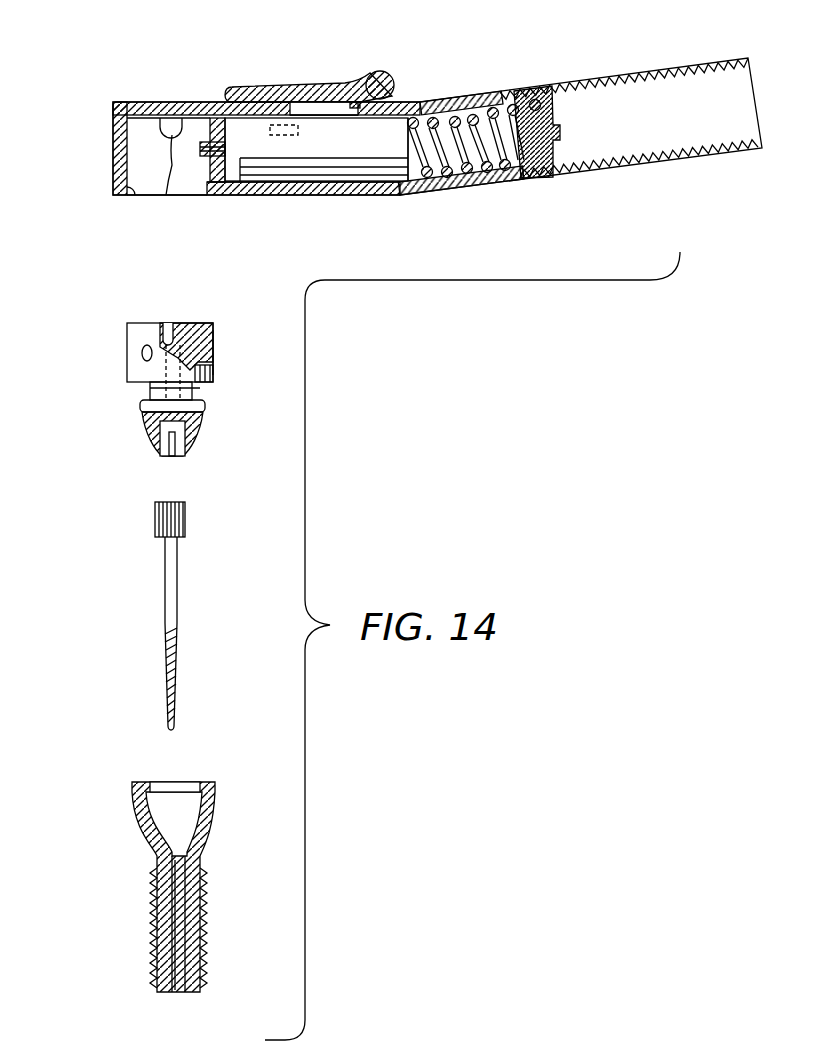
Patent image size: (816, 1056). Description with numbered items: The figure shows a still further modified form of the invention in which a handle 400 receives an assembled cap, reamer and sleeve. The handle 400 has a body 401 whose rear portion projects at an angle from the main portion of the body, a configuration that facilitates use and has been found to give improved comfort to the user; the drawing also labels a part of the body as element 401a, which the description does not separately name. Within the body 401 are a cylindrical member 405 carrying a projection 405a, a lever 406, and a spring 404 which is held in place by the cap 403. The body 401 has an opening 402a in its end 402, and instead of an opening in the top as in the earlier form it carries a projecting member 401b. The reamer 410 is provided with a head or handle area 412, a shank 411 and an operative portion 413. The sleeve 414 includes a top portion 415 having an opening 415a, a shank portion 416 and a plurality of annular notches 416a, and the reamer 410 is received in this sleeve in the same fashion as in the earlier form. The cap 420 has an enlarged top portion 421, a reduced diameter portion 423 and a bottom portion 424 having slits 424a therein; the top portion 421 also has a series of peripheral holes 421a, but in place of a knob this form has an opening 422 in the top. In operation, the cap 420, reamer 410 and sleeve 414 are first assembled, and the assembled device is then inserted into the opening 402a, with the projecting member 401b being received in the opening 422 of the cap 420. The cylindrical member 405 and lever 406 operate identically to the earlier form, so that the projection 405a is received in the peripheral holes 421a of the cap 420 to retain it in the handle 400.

The handle 400 is at (500, 86).
The body 401 is at (410, 188).
The latch lever 401a is at (388, 96).
The projecting member 401b is at (166, 196).
The end 402 is at (112, 150).
The opening 402a is at (133, 196).
The cap 403 is at (562, 150).
The spring 404 is at (470, 170).
The cylindrical member 405 is at (320, 176).
The projection 405a is at (207, 157).
The lever 406 is at (380, 71).
The reamer 410 is at (208, 604).
The shank 411 is at (178, 560).
The head or handle area 412 is at (184, 522).
The operative portion 413 is at (180, 664).
The sleeve 414 is at (236, 812).
The top portion 415 is at (201, 835).
The opening 415a is at (186, 784).
The shank portion 416 is at (206, 890).
The annular notches 416a is at (206, 935).
The cap 420 is at (235, 338).
The enlarged top portion 421 is at (127, 370).
The peripheral holes 421a is at (213, 352).
The opening 422 is at (172, 342).
The reduced diameter portion 423 is at (196, 389).
The bottom portion 424 is at (206, 412).
The slits 424a is at (171, 456).